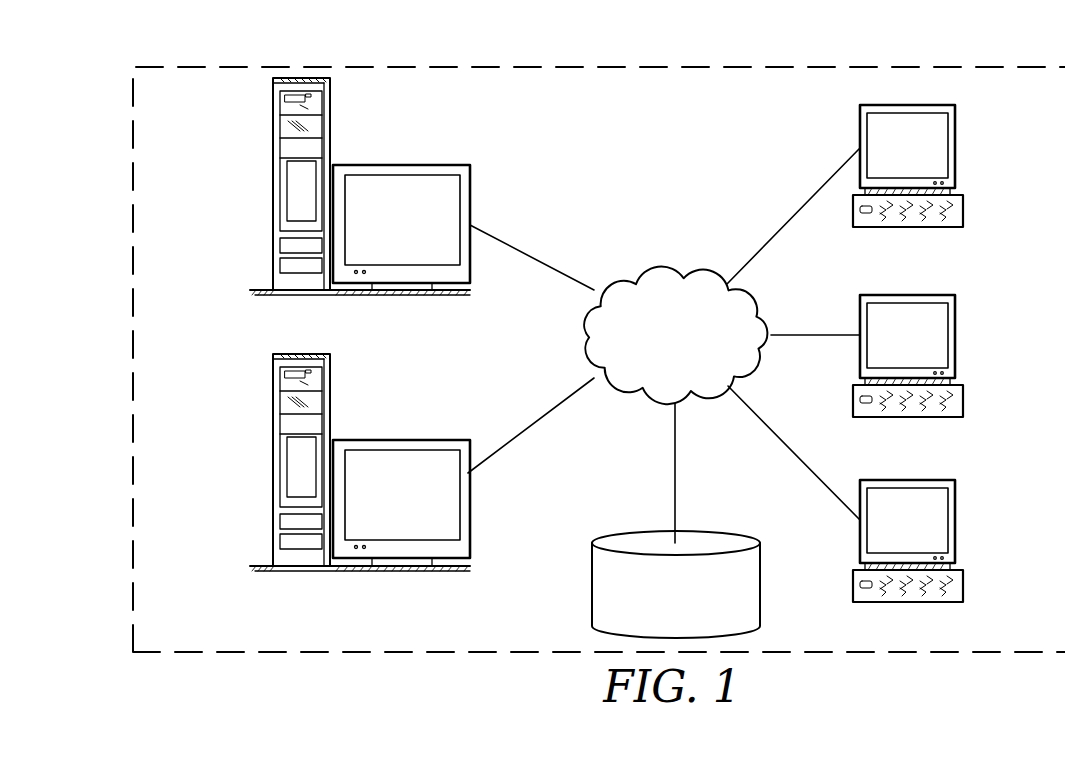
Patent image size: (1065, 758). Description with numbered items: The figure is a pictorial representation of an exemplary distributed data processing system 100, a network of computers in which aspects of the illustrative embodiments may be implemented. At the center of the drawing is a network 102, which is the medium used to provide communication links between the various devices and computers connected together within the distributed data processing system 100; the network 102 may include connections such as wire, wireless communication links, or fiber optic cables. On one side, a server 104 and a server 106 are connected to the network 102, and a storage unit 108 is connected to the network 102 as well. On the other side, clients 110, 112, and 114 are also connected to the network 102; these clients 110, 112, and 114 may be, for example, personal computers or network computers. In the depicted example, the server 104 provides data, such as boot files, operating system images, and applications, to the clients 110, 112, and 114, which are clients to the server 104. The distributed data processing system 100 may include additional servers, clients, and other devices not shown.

The distributed data processing system 100 is at (742, 98).
The network 102 is at (638, 272).
The server 104 is at (272, 188).
The server 106 is at (271, 463).
The storage unit 108 is at (590, 583).
The client 110 is at (957, 147).
The client 112 is at (957, 335).
The client 114 is at (957, 520).